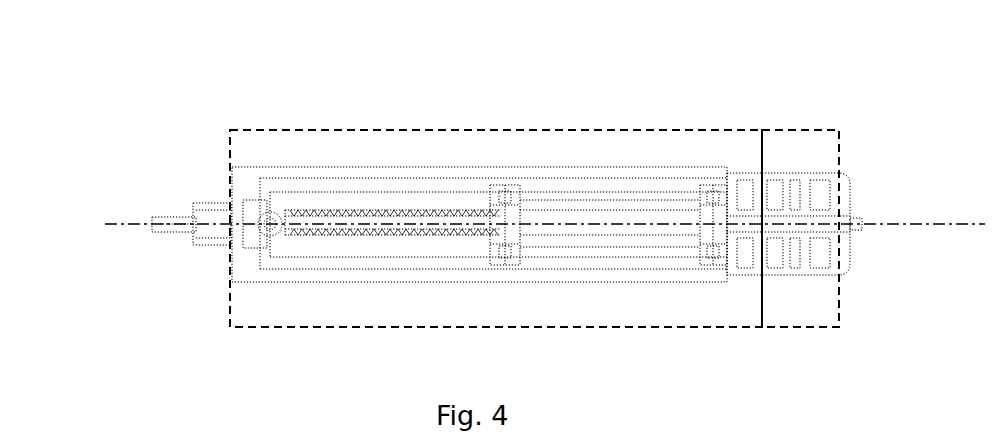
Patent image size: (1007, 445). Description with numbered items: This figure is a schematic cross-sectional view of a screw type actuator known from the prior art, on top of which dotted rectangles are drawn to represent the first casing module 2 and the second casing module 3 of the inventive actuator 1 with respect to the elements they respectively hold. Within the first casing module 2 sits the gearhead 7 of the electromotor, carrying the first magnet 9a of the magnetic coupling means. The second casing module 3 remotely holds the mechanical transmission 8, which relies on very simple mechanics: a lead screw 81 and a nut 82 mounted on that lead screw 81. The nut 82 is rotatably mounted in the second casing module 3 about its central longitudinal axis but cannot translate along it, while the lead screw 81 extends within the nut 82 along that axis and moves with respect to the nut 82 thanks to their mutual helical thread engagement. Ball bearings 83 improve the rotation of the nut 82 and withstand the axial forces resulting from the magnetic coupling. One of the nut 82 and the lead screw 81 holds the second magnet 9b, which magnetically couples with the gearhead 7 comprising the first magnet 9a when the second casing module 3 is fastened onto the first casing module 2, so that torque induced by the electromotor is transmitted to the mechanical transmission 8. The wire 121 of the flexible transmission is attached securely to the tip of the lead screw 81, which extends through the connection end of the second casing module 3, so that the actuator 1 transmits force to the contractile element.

The actuator 1 is at (543, 189).
The first casing module 2 is at (818, 131).
The second casing module 3 is at (535, 131).
The gearhead 7 is at (812, 256).
The mechanical transmission 8 is at (479, 207).
The lead screw 81 is at (375, 230).
The nut 82 is at (605, 273).
The ball bearings 83 is at (503, 262).
The first magnet 9a is at (787, 252).
The second magnet 9b is at (748, 265).
The wire 121 is at (152, 227).